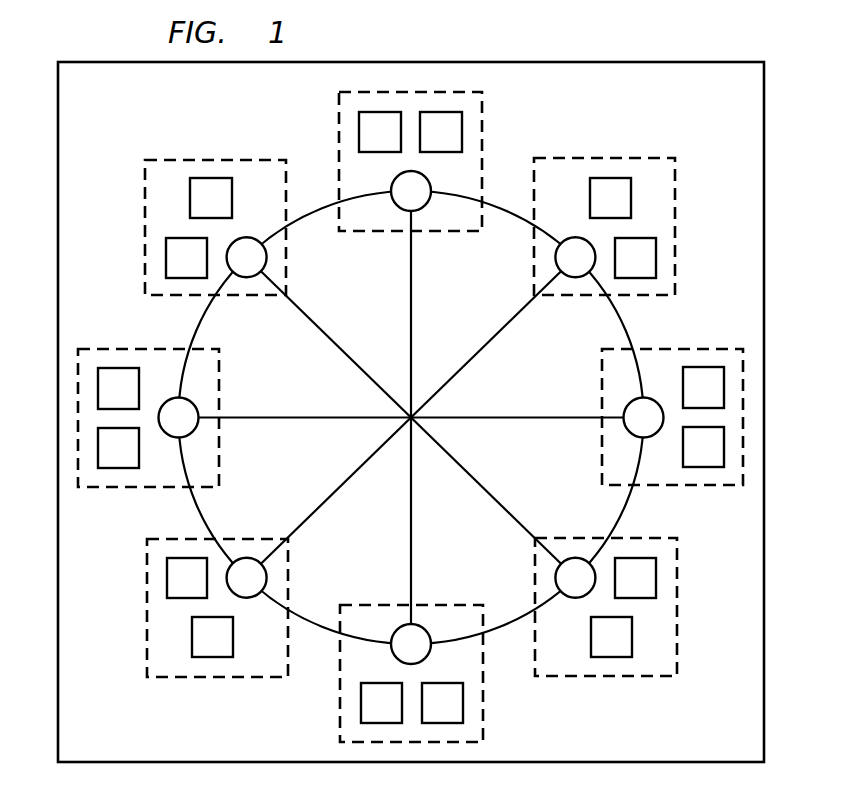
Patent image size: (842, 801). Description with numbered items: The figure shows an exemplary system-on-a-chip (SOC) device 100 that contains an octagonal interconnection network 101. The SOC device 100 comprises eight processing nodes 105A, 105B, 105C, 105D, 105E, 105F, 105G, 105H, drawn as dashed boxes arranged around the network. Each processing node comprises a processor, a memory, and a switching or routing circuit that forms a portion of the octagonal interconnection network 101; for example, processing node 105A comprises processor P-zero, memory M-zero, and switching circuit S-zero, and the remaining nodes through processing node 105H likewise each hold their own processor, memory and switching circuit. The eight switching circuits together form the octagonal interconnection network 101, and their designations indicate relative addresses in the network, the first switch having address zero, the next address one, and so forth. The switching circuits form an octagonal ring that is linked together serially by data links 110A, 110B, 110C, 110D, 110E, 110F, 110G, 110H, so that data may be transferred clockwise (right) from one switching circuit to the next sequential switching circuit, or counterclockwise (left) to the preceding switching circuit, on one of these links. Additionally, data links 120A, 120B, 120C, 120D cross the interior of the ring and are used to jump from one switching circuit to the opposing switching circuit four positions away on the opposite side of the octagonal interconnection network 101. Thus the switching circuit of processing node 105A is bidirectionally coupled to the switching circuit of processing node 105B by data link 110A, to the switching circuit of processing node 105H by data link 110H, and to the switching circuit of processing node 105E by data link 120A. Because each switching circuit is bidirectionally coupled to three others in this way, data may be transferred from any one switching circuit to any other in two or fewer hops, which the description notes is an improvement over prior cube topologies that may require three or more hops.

The system-on-a-chip (SOC) device 100 is at (606, 62).
The octagonal interconnection network 101 is at (527, 125).
The processing node 105A is at (338, 131).
The processing node 105B is at (676, 217).
The processing node 105C is at (710, 348).
The processing node 105D is at (678, 618).
The processing node 105E is at (340, 706).
The processing node 105F is at (147, 616).
The processing node 105G is at (120, 348).
The processing node 105H is at (145, 216).
The data link 110A is at (515, 215).
The data link 110B is at (619, 318).
The data link 110C is at (619, 517).
The data link 110D is at (513, 620).
The data link 110E is at (309, 620).
The data link 110F is at (203, 517).
The data link 110G is at (203, 318).
The data link 110H is at (307, 215).
The data link 120A is at (412, 310).
The data link 120B is at (472, 358).
The data link 120C is at (517, 419).
The data link 120D is at (490, 495).